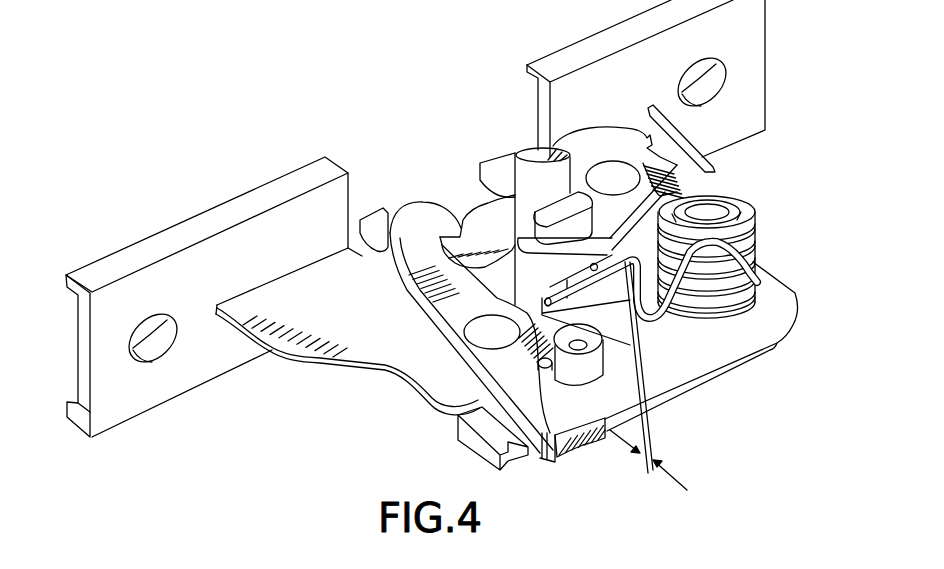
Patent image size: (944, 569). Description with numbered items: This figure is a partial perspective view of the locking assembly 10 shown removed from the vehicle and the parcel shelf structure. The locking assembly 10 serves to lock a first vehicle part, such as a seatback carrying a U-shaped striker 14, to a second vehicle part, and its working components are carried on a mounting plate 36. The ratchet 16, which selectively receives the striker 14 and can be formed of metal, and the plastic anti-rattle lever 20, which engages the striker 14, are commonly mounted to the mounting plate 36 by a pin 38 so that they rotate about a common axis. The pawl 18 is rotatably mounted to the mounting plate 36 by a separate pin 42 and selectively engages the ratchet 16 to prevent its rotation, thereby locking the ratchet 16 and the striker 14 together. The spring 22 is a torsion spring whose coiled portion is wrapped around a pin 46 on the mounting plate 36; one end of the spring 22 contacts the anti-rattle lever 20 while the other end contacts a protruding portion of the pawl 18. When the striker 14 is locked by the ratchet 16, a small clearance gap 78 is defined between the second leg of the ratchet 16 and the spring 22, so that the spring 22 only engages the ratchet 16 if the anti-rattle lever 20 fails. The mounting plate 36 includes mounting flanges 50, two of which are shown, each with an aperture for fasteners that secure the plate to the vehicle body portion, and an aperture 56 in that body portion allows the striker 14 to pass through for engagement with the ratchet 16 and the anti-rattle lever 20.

The locking assembly 10 is at (267, 403).
The striker 14 is at (527, 182).
The ratchet 16 is at (481, 220).
The pawl 18 is at (457, 312).
The anti-rattle lever 20 is at (597, 140).
The spring 22 is at (740, 270).
The mounting plate 36 is at (713, 347).
The pin 38 is at (627, 173).
The pin 42 is at (555, 437).
The pin 46 is at (712, 213).
The mounting flanges 50 is at (221, 254).
The aperture 56 is at (150, 357).
The clearance gap 78 is at (654, 453).